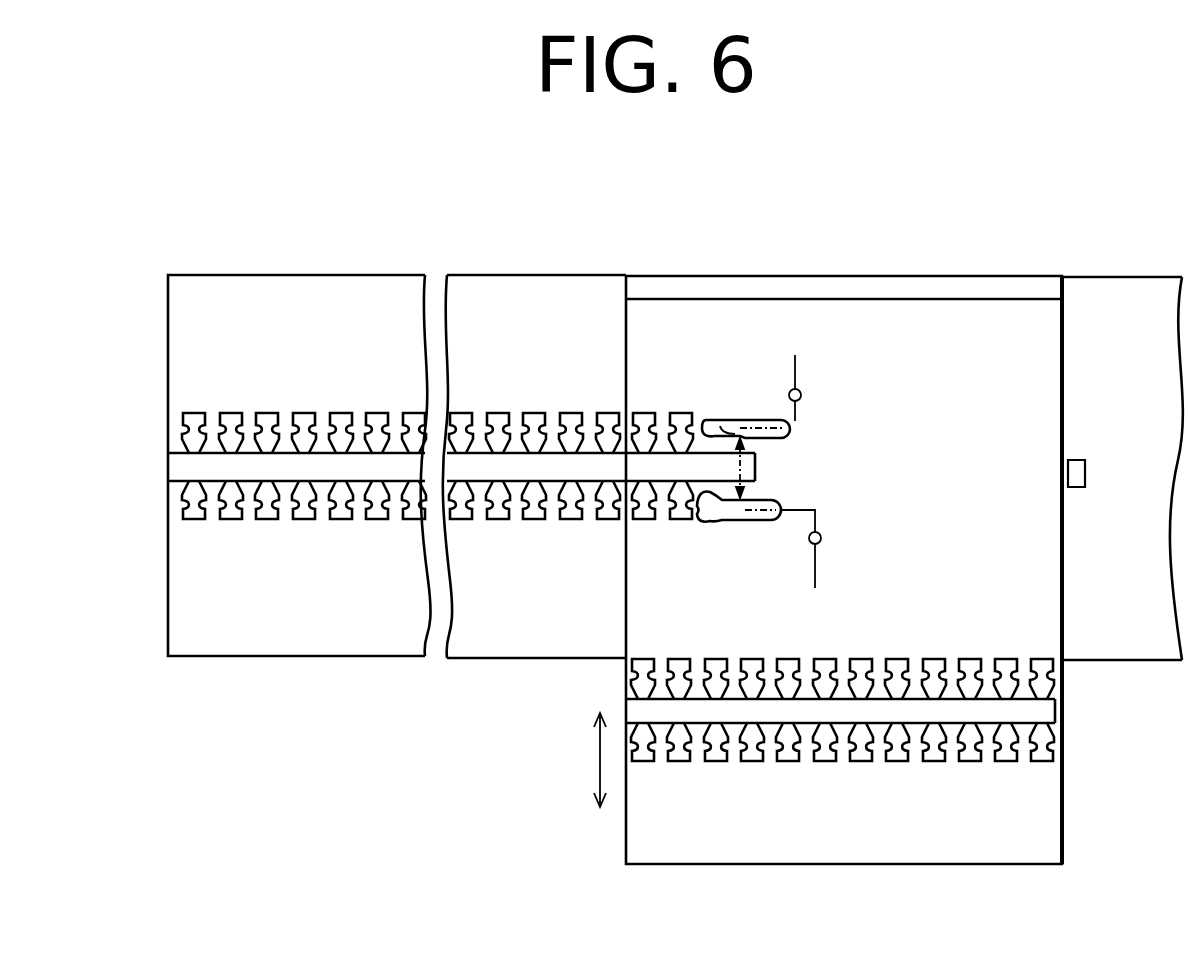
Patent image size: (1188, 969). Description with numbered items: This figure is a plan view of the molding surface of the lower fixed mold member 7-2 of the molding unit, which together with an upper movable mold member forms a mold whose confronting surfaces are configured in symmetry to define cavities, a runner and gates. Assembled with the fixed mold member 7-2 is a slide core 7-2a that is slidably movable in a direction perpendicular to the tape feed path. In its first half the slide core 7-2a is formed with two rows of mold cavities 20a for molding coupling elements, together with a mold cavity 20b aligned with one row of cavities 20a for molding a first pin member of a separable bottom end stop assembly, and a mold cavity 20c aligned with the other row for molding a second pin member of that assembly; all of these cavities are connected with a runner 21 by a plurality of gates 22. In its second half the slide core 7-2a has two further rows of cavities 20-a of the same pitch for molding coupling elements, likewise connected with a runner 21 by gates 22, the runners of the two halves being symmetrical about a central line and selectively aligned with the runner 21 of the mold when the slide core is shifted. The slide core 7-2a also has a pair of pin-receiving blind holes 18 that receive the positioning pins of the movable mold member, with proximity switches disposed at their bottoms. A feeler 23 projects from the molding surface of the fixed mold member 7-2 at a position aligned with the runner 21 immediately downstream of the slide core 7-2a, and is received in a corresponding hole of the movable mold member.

The lower fixed mold member 7-2 is at (513, 254).
The slide core 7-2a is at (760, 317).
The mold cavities 20a is at (680, 405).
The mold cavity 20b is at (715, 420).
The mold cavity 20c is at (707, 521).
The pin-receiving blind holes 18 is at (801, 395).
The runner 21 is at (298, 466).
The gates 22 is at (365, 490).
The feeler 23 is at (1083, 484).
The mold cavities 20-a is at (1035, 770).